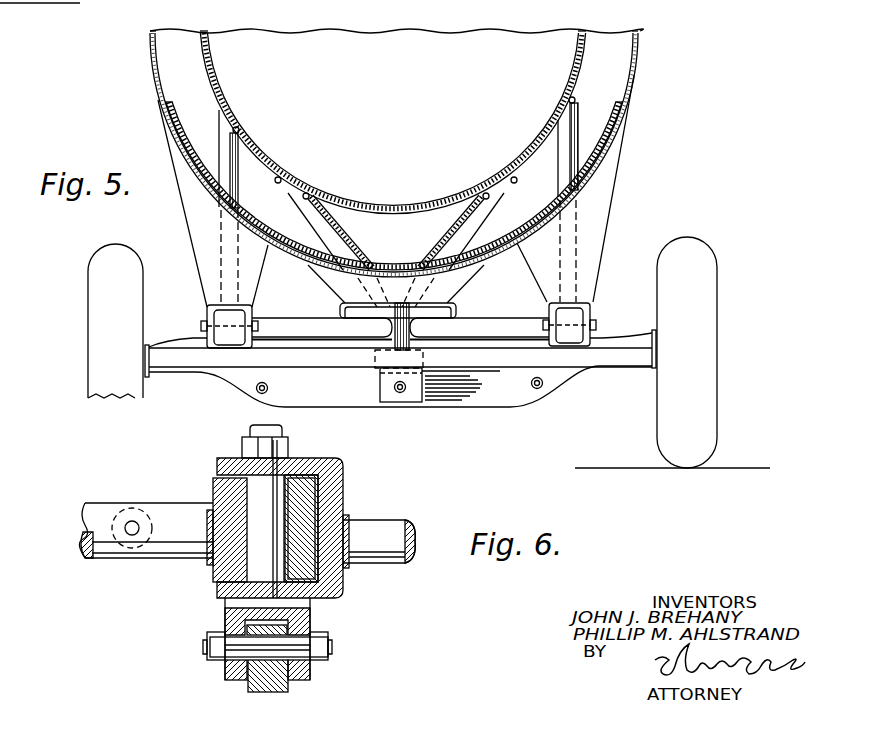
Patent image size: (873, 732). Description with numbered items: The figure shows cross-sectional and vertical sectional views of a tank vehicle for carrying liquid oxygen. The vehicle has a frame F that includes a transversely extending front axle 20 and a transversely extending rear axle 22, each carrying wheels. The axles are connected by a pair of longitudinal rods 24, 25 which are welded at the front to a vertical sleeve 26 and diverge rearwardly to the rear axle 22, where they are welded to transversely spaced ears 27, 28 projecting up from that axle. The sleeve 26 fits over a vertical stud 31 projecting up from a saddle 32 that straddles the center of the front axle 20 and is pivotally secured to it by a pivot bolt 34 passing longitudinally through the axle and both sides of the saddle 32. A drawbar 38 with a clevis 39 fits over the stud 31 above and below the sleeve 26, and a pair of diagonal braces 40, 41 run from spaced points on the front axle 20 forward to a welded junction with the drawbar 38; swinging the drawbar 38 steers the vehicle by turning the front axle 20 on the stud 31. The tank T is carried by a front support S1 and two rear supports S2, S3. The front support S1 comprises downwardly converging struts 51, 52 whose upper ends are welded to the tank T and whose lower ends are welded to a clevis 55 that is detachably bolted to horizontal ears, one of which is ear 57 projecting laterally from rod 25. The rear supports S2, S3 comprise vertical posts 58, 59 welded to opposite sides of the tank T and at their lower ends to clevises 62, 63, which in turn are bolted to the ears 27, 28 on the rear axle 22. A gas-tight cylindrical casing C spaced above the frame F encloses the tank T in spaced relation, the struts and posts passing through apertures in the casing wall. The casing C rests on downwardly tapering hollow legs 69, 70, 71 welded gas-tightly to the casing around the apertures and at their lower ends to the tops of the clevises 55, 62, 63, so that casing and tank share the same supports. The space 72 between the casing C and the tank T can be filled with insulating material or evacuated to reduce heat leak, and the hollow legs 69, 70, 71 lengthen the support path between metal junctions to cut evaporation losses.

In FIG. 5, the space 72 is at (178, 62).
In FIG. 5, the cylindrical casing C is at (152, 54).
In FIG. 5, the tank T is at (206, 53).
In FIG. 5, the front leg 69 is at (462, 272).
In FIG. 5, the rear support S3 is at (246, 180).
In FIG. 5, the vertical post 59 is at (232, 170).
In FIG. 5, the rear leg 71 is at (205, 246).
In FIG. 5, the rear support S2 is at (553, 164).
In FIG. 5, the vertical post 58 is at (565, 148).
In FIG. 5, the rear leg 70 is at (600, 210).
In FIG. 5, the front support S1 is at (343, 228).
In FIG. 5, the strut 52 is at (352, 240).
In FIG. 5, the strut 51 is at (461, 238).
In FIG. 5, the clevis 55 is at (457, 310).
In FIG. 5, the vertical sleeve 26 is at (401, 318).
In FIG. 6, the vertical sleeve 26 is at (300, 500).
In FIG. 5, the rod 25 is at (283, 325).
In FIG. 6, the rod 25 is at (104, 552).
In FIG. 5, the clevis 63 is at (209, 318).
In FIG. 5, the clevis 62 is at (588, 312).
In FIG. 5, the frame F is at (583, 382).
In FIG. 5, the front axle 20 is at (448, 392).
In FIG. 6, the front axle 20 is at (268, 672).
In FIG. 5, the rod 24 is at (510, 322).
In FIG. 5, the rear axle 22 is at (475, 355).
In FIG. 5, the ear 28 is at (229, 341).
In FIG. 5, the ear 27 is at (569, 336).
In FIG. 5, the diagonal brace 41 is at (257, 392).
In FIG. 5, the diagonal brace 40 is at (542, 388).
In FIG. 5, the saddle 32 is at (380, 384).
In FIG. 6, the saddle 32 is at (300, 617).
In FIG. 5, the pivot bolt 34 is at (401, 393).
In FIG. 6, the pivot bolt 34 is at (296, 646).
In FIG. 6, the horizontal ear 57 is at (133, 521).
In FIG. 6, the clevis 39 is at (312, 458).
In FIG. 6, the stud 31 is at (262, 548).
In FIG. 6, the drawbar 38 is at (394, 554).